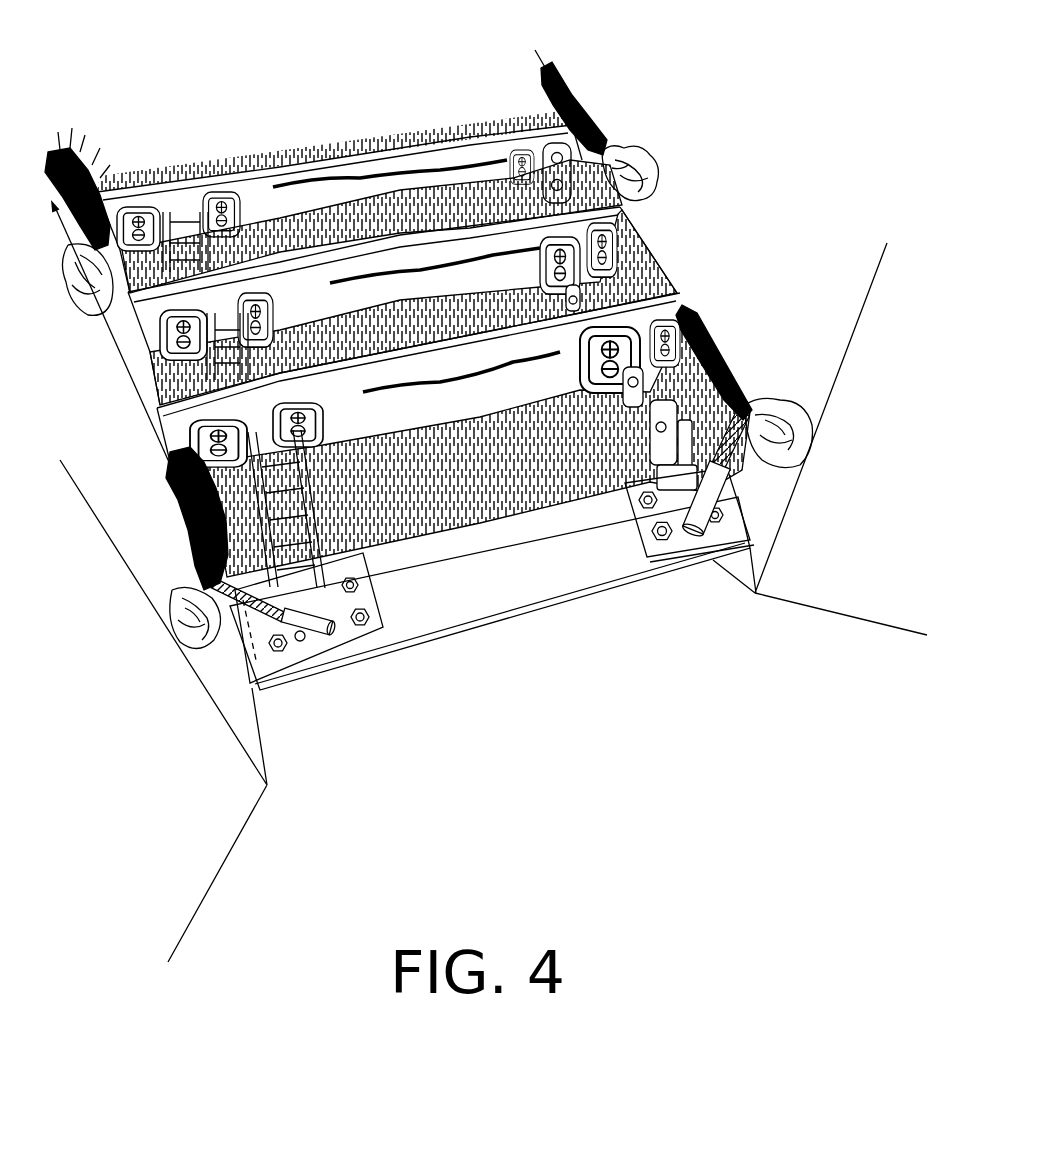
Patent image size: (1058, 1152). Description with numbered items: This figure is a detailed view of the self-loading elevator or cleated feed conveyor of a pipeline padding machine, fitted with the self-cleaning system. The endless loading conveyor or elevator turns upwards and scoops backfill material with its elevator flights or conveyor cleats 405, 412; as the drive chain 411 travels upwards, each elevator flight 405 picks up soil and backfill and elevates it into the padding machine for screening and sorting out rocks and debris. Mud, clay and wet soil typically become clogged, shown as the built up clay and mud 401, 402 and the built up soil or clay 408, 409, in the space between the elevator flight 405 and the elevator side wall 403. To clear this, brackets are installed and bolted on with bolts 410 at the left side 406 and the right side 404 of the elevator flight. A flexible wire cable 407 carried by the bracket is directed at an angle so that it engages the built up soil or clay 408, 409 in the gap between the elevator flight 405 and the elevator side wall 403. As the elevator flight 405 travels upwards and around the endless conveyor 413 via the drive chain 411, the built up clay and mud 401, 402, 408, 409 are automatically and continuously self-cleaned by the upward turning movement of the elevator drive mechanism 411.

The built up clay and mud 401 is at (600, 140).
The built up clay and mud 402 is at (650, 155).
The elevator side wall 403 is at (849, 583).
The right side of the elevator flight 404 is at (680, 540).
The elevator flight 405 is at (497, 583).
The left side of the elevator flight 406 is at (360, 628).
The flexible wire cable 407 is at (311, 630).
The built up soil or clay 408 is at (185, 652).
The built up soil or clay 409 is at (190, 510).
The bolt 410 is at (142, 213).
The drive chain 411 is at (184, 220).
The conveyor cleat 412 is at (268, 207).
The endless conveyor 413 is at (408, 220).